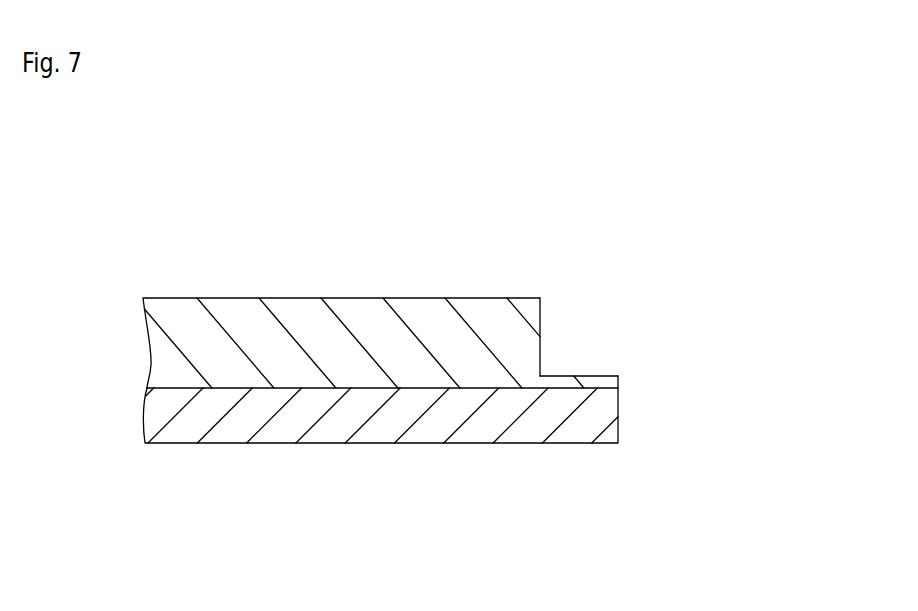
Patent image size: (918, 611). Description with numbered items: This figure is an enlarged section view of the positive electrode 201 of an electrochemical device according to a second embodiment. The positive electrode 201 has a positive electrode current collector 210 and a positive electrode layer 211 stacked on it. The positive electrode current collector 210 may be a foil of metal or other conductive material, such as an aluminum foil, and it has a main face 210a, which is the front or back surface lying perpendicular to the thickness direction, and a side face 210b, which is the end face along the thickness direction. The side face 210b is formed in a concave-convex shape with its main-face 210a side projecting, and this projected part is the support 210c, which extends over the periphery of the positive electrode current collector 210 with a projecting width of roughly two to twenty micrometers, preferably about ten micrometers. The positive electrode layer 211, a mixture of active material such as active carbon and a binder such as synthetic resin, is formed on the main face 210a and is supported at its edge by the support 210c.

The positive electrode 201 is at (715, 220).
The positive electrode current collector 210 is at (375, 318).
The main face 210a is at (318, 388).
The side face 210b is at (540, 317).
The support 210c is at (545, 367).
The positive electrode layer 211 is at (463, 422).